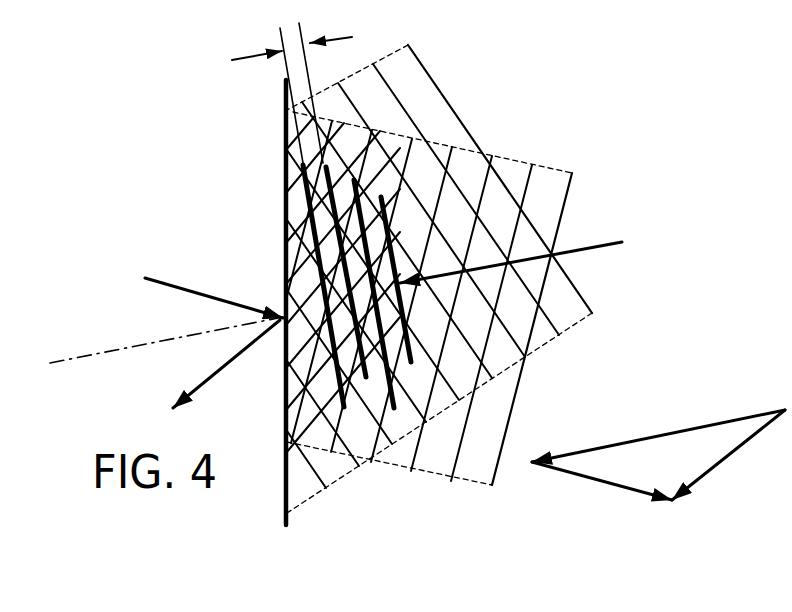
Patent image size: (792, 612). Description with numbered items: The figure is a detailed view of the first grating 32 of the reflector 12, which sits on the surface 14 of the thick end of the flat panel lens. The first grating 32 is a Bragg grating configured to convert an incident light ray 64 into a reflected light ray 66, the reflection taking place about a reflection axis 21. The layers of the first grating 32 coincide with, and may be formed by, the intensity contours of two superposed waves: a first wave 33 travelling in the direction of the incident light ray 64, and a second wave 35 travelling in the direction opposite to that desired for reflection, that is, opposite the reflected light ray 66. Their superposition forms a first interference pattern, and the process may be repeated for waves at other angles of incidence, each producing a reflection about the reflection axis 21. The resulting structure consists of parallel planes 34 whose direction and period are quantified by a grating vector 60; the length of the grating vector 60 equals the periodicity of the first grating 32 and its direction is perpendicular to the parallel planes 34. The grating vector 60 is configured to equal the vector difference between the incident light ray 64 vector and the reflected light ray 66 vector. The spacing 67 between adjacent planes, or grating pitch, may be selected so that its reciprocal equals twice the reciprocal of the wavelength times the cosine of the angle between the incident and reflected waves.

The reflector 12 is at (591, 106).
The surface 14 is at (284, 148).
The reflection axis 21 is at (97, 356).
The first grating 32 is at (482, 283).
The first wave 33 is at (508, 158).
The parallel planes 34 is at (338, 392).
The second wave 35 is at (590, 322).
The grating vector 60 is at (583, 253).
The incident light ray 64 is at (213, 292).
The reflected light ray 66 is at (223, 372).
The spacing 67 is at (284, 38).